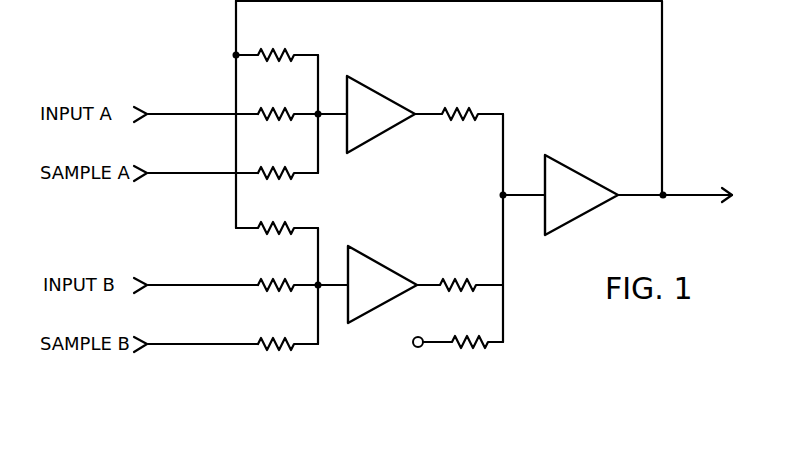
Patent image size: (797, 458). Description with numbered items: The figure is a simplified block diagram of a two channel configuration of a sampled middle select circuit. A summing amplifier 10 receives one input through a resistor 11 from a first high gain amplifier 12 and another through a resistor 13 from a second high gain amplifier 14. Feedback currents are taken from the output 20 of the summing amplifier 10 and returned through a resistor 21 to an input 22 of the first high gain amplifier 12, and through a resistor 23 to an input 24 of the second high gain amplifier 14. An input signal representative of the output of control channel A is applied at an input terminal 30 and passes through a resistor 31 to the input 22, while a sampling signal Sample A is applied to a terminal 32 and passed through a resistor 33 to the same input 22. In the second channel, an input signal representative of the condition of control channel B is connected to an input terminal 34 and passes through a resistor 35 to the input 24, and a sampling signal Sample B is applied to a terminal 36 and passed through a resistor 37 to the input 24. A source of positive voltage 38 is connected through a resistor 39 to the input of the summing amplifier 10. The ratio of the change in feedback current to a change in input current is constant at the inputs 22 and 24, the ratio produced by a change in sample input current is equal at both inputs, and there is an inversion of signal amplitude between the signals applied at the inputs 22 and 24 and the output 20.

The summing amplifier 10 is at (585, 175).
The resistor 11 is at (455, 112).
The first high gain amplifier 12 is at (382, 101).
The resistor 13 is at (453, 282).
The second high gain amplifier 14 is at (385, 262).
The output 20 is at (665, 193).
The resistor 21 is at (270, 50).
The input 22 is at (321, 112).
The resistor 23 is at (270, 225).
The input 24 is at (321, 283).
The input terminal 30 is at (160, 114).
The resistor 31 is at (270, 110).
The terminal 32 is at (160, 173).
The resistor 33 is at (270, 170).
The input terminal 34 is at (163, 285).
The resistor 35 is at (270, 282).
The terminal 36 is at (163, 344).
The resistor 37 is at (270, 341).
The source of positive voltage 38 is at (415, 337).
The resistor 39 is at (463, 340).